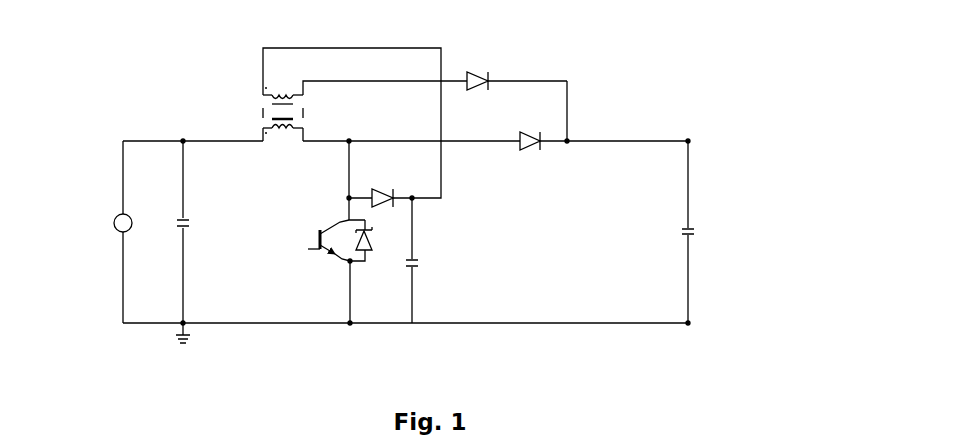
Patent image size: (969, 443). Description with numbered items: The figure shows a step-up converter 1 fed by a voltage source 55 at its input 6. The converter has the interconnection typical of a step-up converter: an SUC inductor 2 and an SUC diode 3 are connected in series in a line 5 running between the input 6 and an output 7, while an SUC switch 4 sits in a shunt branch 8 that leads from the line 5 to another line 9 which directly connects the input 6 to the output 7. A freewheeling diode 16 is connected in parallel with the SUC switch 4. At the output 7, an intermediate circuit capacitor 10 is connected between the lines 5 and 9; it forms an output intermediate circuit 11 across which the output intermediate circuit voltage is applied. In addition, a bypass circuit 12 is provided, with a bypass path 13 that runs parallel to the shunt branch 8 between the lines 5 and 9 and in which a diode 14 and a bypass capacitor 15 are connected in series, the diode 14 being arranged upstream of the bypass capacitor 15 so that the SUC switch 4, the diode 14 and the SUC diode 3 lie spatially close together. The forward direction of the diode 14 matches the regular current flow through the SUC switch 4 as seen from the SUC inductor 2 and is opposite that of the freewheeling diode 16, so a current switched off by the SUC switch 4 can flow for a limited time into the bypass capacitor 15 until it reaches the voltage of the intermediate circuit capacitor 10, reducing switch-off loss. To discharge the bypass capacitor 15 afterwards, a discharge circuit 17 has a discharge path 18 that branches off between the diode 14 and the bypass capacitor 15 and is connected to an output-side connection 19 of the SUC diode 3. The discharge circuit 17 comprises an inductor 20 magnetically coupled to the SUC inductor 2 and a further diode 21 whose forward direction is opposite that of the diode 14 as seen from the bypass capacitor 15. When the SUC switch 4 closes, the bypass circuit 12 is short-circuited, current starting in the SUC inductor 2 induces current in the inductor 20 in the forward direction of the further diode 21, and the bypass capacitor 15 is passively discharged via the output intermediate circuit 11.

The step-up converter 1 is at (98, 82).
The SUC inductor 2 is at (237, 99).
The SUC diode 3 is at (530, 152).
The SUC switch 4 is at (312, 262).
The line 5 is at (642, 141).
The input 6 is at (183, 141).
The output 7 is at (752, 204).
The shunt branch 8 is at (342, 292).
The line 9 is at (560, 323).
The intermediate circuit capacitor 10 is at (692, 232).
The output intermediate circuit 11 is at (703, 253).
The bypass circuit 12 is at (492, 290).
The bypass path 13 is at (420, 224).
The diode 14 is at (380, 194).
The bypass capacitor 15 is at (415, 267).
The freewheeling diode 16 is at (375, 252).
The discharge circuit 17 is at (398, 112).
The discharge path 18 is at (448, 52).
The output-side connection 19 is at (567, 141).
The inductor 20 is at (280, 97).
The further diode 21 is at (478, 92).
The voltage source 55 is at (120, 232).